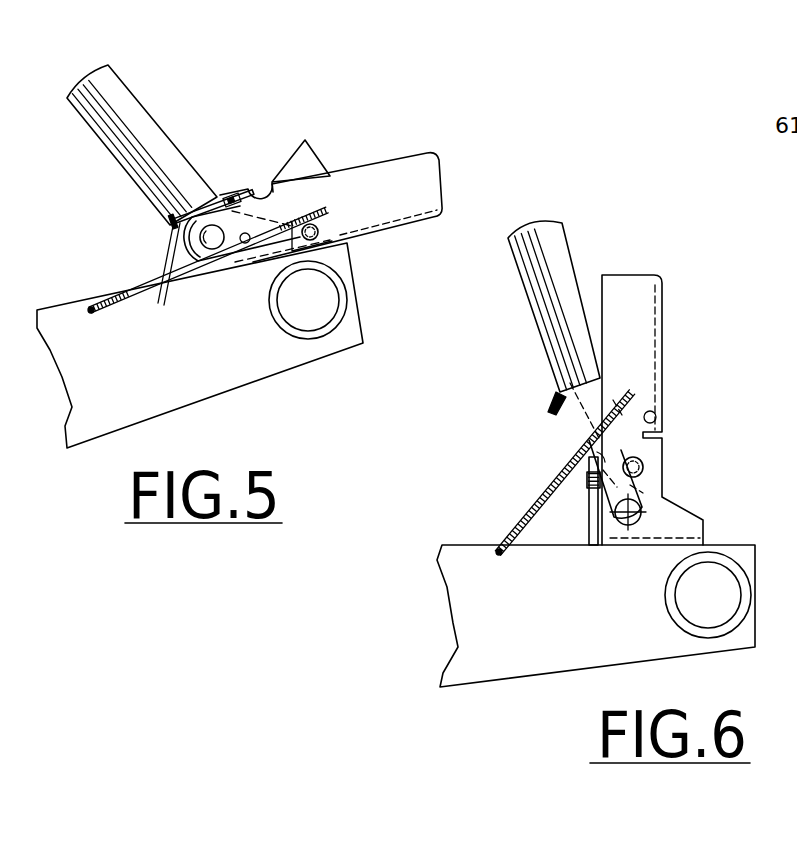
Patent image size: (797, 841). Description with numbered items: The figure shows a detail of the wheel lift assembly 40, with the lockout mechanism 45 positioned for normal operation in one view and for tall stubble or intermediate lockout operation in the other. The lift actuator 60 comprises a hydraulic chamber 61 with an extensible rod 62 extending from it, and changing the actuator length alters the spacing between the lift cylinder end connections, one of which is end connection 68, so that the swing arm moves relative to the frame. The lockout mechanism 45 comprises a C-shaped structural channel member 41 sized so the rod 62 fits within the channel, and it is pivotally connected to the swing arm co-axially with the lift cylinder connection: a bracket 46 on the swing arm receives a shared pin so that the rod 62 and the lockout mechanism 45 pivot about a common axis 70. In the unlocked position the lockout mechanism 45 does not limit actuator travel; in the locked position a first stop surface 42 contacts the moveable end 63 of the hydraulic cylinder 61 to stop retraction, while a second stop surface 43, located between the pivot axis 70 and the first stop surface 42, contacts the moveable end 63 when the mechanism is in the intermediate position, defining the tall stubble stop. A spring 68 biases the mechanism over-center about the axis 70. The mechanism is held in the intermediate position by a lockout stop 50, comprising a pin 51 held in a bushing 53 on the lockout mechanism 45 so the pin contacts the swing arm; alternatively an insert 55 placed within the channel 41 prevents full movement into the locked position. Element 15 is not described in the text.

In FIG. 5, the support base 15 is at (286, 334).
In FIG. 6, the support base 15 is at (732, 548).
In FIG. 5, the wheel lift assembly 40 is at (282, 76).
In FIG. 5, the C-shaped structural channel member 41 is at (371, 213).
In FIG. 5, the first stop surface 42 is at (438, 175).
In FIG. 6, the first stop surface 42 is at (632, 272).
In FIG. 5, the second stop surface 43 is at (351, 146).
In FIG. 6, the second stop surface 43 is at (530, 370).
In FIG. 5, the lockout mechanism 45 is at (478, 170).
In FIG. 6, the lockout mechanism 45 is at (712, 392).
In FIG. 6, the bracket 46 is at (673, 511).
In FIG. 6, the lockout stop 50 is at (552, 517).
In FIG. 5, the pin 51 is at (177, 192).
In FIG. 6, the pin 51 is at (596, 518).
In FIG. 5, the bushing 53 is at (233, 194).
In FIG. 6, the bushing 53 is at (586, 481).
In FIG. 5, the insert 55 is at (326, 240).
In FIG. 6, the insert 55 is at (644, 462).
In FIG. 5, the lift actuator 60 is at (184, 80).
In FIG. 5, the hydraulic chamber 61 is at (101, 149).
In FIG. 6, the hydraulic chamber 61 is at (569, 246).
In FIG. 5, the extensible rod 62 is at (242, 233).
In FIG. 6, the extensible rod 62 is at (616, 433).
In FIG. 5, the moveable end 63 is at (181, 232).
In FIG. 6, the moveable end 63 is at (560, 404).
In FIG. 5, the spring 68 is at (150, 282).
In FIG. 6, the spring 68 is at (545, 502).
In FIG. 6, the common axis 70 is at (639, 498).